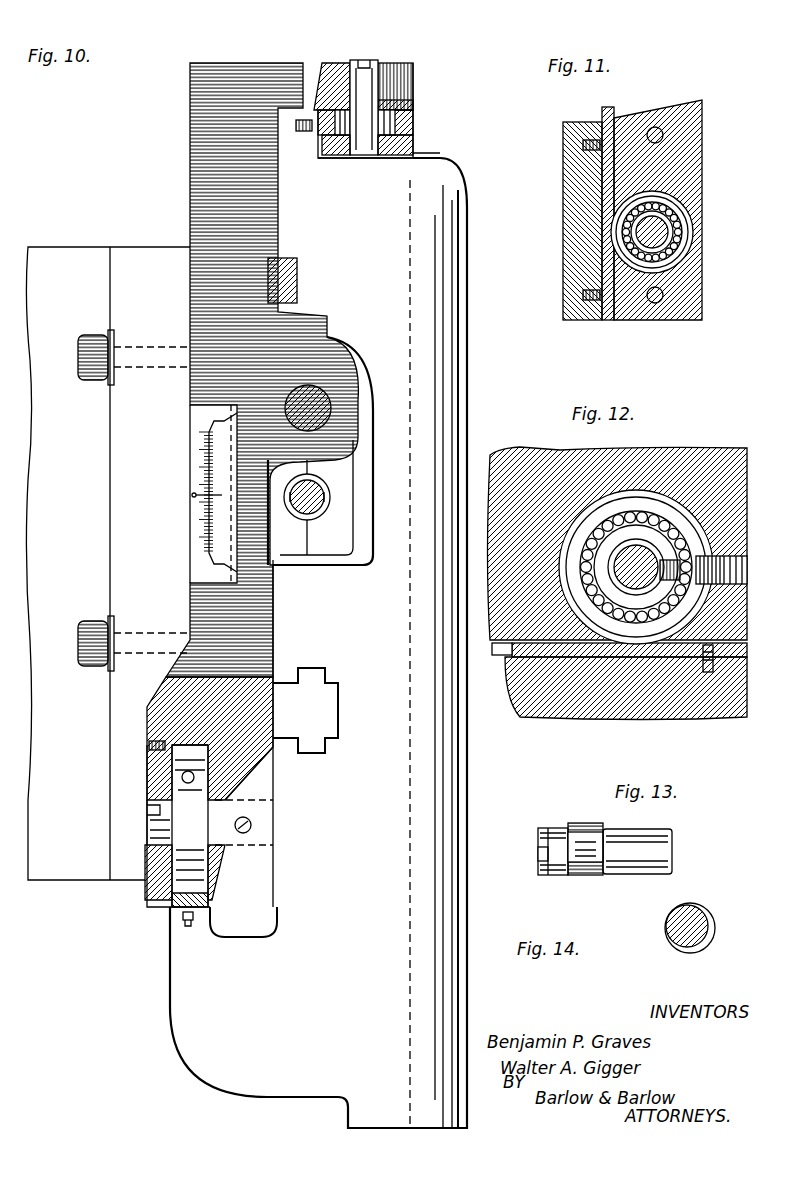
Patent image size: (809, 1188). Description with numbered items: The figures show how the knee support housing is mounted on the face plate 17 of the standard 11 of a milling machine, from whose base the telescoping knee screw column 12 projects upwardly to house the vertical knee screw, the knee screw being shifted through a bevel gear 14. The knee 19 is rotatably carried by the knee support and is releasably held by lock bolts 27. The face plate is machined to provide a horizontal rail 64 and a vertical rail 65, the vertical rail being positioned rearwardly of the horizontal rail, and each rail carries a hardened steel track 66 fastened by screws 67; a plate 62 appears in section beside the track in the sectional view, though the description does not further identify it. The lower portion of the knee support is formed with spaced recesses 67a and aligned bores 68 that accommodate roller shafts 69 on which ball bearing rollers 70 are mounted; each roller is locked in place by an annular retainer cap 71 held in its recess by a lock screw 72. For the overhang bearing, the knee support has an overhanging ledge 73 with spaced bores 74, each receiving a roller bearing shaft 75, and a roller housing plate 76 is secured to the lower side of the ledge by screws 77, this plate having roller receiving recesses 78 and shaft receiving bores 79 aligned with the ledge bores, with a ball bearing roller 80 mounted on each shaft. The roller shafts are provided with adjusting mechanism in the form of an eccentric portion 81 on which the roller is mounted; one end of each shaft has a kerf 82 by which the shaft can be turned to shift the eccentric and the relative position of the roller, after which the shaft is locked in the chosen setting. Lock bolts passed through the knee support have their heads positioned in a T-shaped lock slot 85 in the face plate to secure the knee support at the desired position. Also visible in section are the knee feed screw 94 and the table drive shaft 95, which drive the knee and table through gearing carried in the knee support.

In FIG. 10, the standard 11 is at (190, 128).
In FIG. 10, the telescoping knee screw column 12 is at (147, 715).
In FIG. 13, the bevel gear 14 is at (556, 843).
In FIG. 10, the face plate 17 is at (195, 165).
In FIG. 10, the knee 19 is at (131, 263).
In FIG. 10, the lock bolts 27 is at (78, 358).
In FIG. 11, the plate 62 is at (575, 176).
In FIG. 10, the horizontal rail 64 is at (175, 916).
In FIG. 10, the vertical rail 65 is at (329, 226).
In FIG. 10, the hardened steel track 66 is at (330, 95).
In FIG. 11, the hardened steel track 66 is at (603, 120).
In FIG. 10, the screws 67 is at (305, 133).
In FIG. 10, the recesses 67a is at (233, 773).
In FIG. 10, the bores 68 is at (265, 800).
In FIG. 10, the roller shaft 69 is at (265, 822).
In FIG. 12, the roller shaft 69 is at (640, 590).
In FIG. 13, the roller shaft 69 is at (640, 865).
In FIG. 14, the roller shaft 69 is at (700, 946).
In FIG. 10, the ball bearing roller 70 is at (183, 777).
In FIG. 12, the ball bearing roller 70 is at (612, 630).
In FIG. 10, the annular retainer cap 71 is at (150, 770).
In FIG. 10, the lock screw 72 is at (148, 745).
In FIG. 10, the overhanging arm or ledge 73 is at (292, 70).
In FIG. 10, the bores 74 is at (393, 70).
In FIG. 10, the roller bearing shaft 75 is at (413, 107).
In FIG. 11, the roller bearing shaft 75 is at (572, 258).
In FIG. 10, the roller housing plate 76 is at (415, 153).
In FIG. 11, the roller housing plate 76 is at (692, 200).
In FIG. 11, the screws 77 is at (700, 120).
In FIG. 10, the roller receiving recesses 78 is at (372, 124).
In FIG. 11, the roller receiving recesses 78 is at (680, 246).
In FIG. 10, the shaft receiving bores 79 is at (386, 158).
In FIG. 11, the ball bearing roller 80 is at (685, 252).
In FIG. 13, the eccentric portion 81 is at (587, 835).
In FIG. 14, the eccentric portion 81 is at (703, 909).
In FIG. 13, the kerf 82 is at (537, 852).
In FIG. 10, the T-shaped lock slot 85 is at (325, 692).
In FIG. 12, the T-shaped lock slot 85 is at (725, 560).
In FIG. 10, the knee feed screw 94 is at (323, 387).
In FIG. 10, the table drive shaft 95 is at (330, 492).